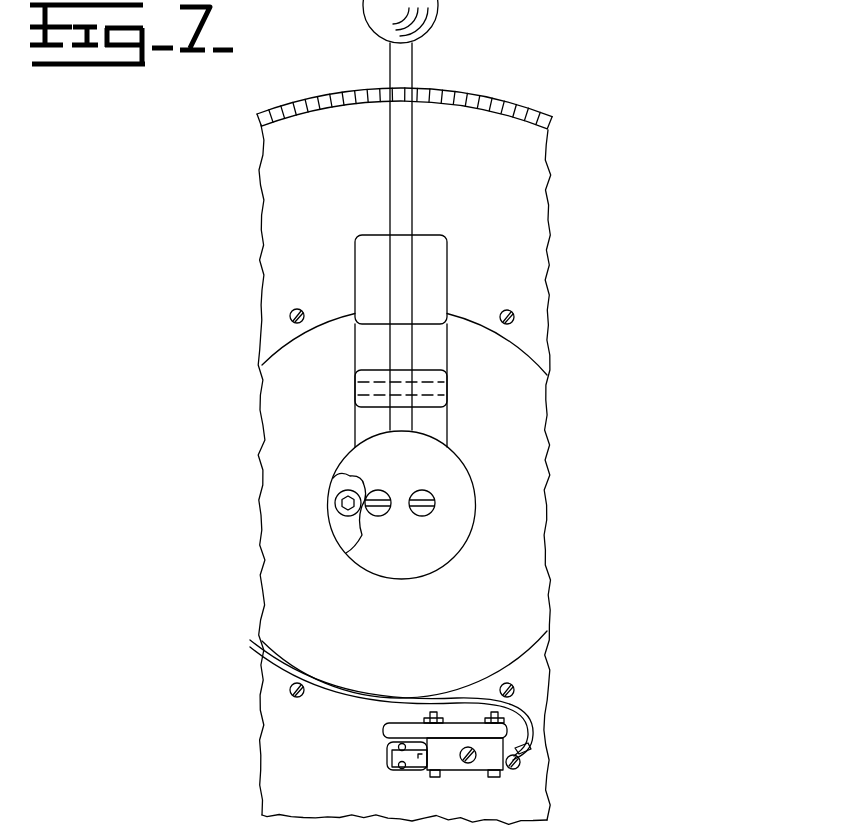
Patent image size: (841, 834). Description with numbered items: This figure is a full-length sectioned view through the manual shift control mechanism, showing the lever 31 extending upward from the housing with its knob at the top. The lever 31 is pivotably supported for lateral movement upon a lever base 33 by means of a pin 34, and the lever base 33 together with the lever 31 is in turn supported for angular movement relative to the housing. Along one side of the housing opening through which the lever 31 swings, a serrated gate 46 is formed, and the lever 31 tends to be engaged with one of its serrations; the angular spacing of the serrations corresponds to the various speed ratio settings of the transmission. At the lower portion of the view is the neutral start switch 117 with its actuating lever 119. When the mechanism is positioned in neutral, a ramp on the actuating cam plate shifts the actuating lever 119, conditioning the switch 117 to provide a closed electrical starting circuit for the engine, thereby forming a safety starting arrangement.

The serrated gate 46 is at (471, 91).
The lever 31 is at (415, 147).
The lever base 33 is at (437, 256).
The pin 34 is at (440, 391).
The neutral start switch 117 is at (378, 762).
The actuating lever 119 is at (418, 755).